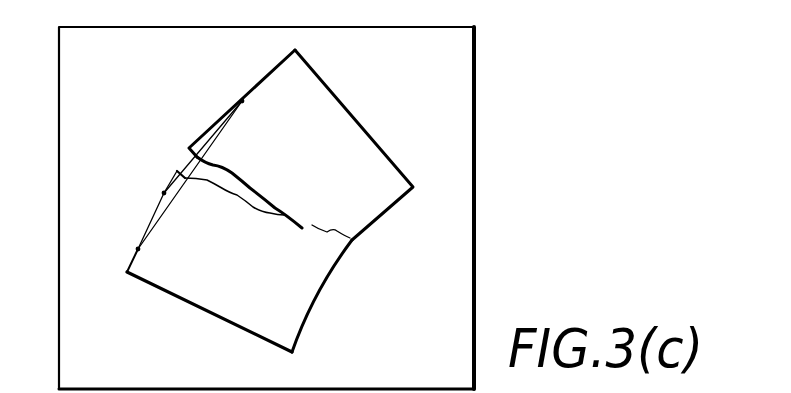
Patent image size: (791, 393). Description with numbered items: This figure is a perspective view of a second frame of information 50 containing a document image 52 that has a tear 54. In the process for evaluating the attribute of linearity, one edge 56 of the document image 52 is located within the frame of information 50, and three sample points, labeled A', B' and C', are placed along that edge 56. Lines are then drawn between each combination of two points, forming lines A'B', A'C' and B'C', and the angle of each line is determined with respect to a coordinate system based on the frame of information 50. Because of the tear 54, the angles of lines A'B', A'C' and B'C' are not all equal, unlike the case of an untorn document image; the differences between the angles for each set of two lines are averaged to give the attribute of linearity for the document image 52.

The second frame of information 50 is at (475, 244).
The document image 52 is at (267, 276).
The tear 54 is at (257, 193).
The edge 56 is at (262, 82).